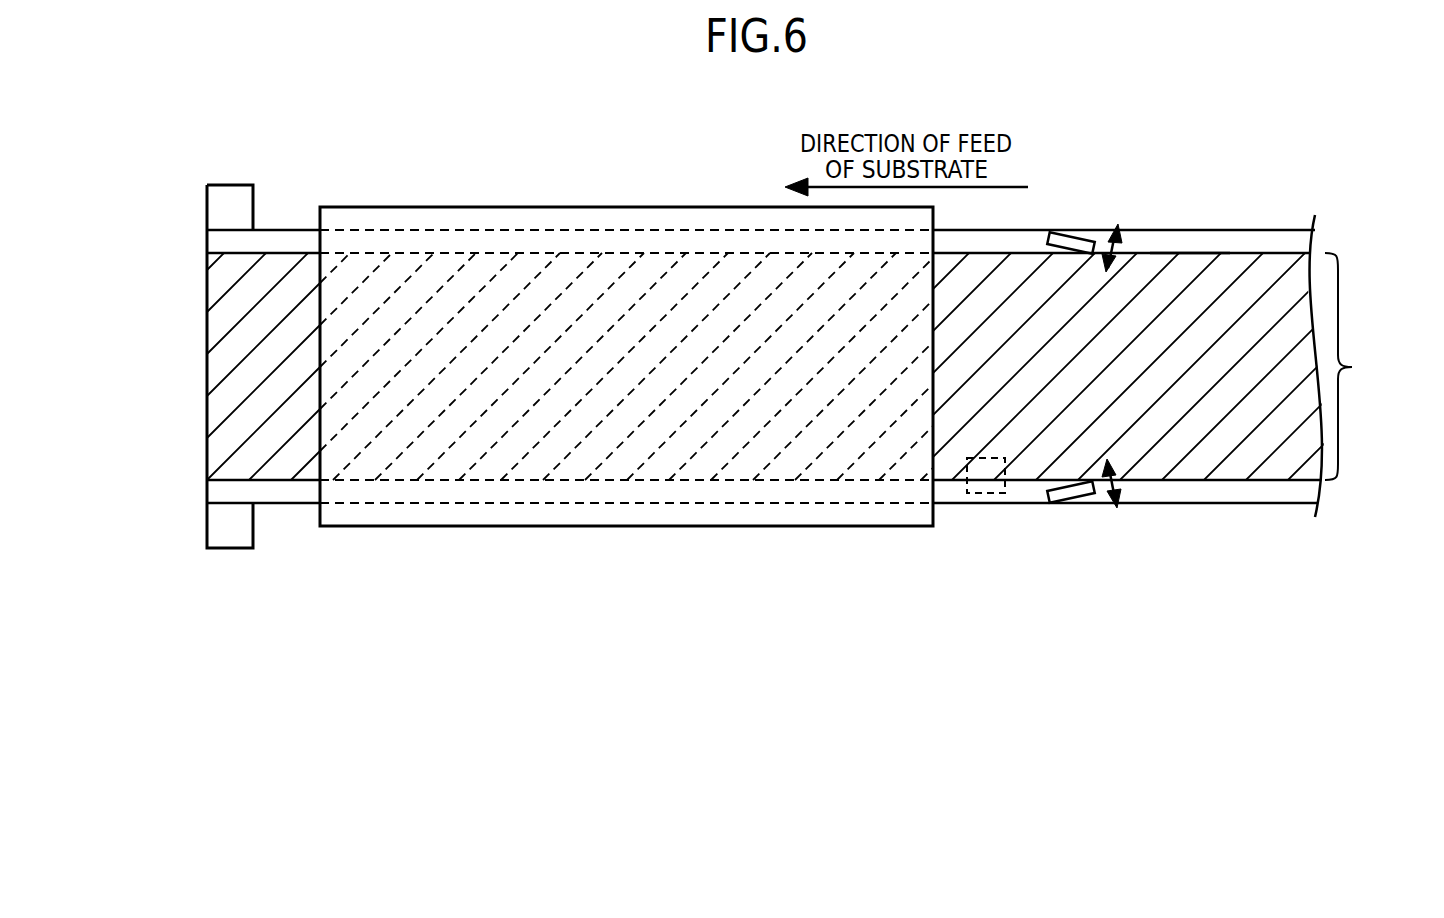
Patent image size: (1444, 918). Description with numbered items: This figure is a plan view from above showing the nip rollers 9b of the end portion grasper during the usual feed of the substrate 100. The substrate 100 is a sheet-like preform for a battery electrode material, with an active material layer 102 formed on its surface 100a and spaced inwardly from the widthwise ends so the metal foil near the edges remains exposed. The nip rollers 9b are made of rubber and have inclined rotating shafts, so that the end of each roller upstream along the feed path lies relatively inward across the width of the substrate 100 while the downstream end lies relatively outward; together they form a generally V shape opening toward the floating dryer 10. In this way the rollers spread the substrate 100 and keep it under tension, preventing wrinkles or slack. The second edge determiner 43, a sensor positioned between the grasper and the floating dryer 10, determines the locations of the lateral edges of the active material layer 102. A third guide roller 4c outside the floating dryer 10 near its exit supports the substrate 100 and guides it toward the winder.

The floating dryer 10 is at (678, 207).
The third guide roller 4c is at (217, 208).
The nip rollers 9b is at (1073, 240).
The second edge determiner 43 is at (990, 495).
The substrate 100 is at (1275, 230).
The surface 100a is at (1187, 267).
The active material layer 102 is at (1371, 366).